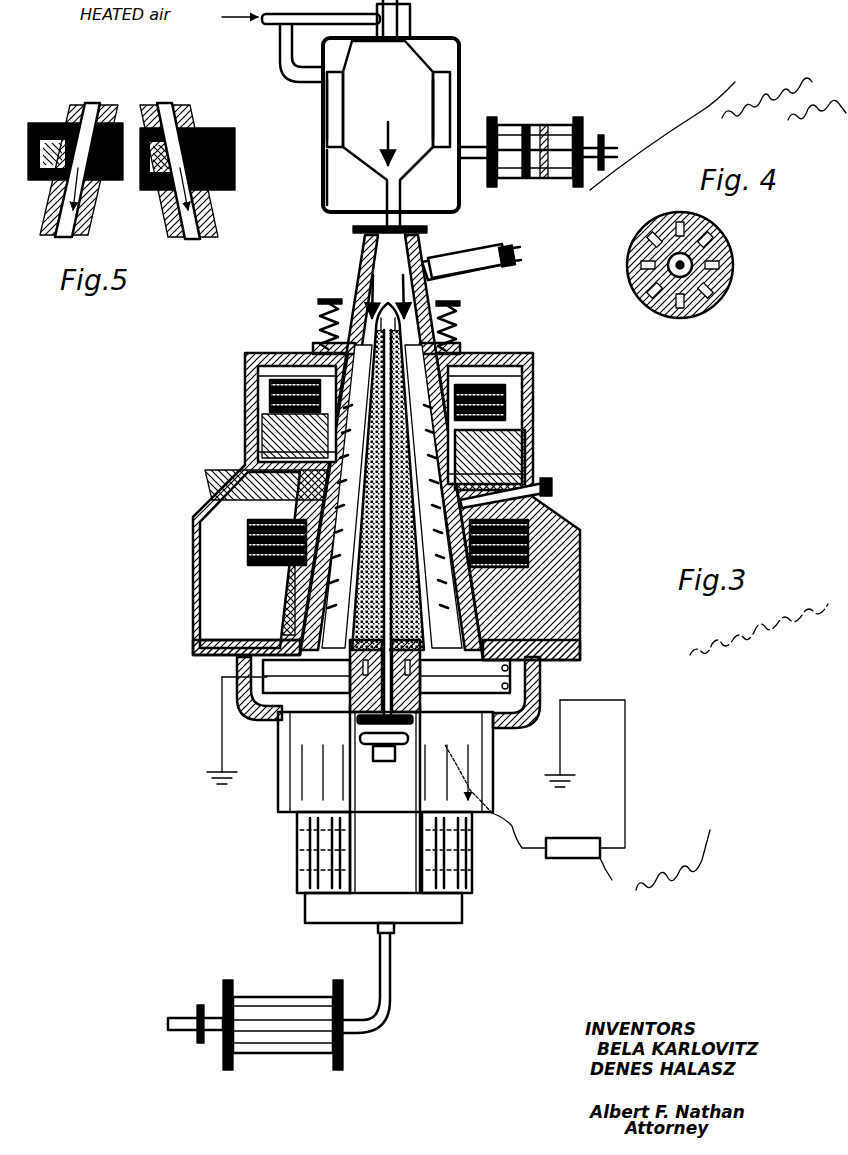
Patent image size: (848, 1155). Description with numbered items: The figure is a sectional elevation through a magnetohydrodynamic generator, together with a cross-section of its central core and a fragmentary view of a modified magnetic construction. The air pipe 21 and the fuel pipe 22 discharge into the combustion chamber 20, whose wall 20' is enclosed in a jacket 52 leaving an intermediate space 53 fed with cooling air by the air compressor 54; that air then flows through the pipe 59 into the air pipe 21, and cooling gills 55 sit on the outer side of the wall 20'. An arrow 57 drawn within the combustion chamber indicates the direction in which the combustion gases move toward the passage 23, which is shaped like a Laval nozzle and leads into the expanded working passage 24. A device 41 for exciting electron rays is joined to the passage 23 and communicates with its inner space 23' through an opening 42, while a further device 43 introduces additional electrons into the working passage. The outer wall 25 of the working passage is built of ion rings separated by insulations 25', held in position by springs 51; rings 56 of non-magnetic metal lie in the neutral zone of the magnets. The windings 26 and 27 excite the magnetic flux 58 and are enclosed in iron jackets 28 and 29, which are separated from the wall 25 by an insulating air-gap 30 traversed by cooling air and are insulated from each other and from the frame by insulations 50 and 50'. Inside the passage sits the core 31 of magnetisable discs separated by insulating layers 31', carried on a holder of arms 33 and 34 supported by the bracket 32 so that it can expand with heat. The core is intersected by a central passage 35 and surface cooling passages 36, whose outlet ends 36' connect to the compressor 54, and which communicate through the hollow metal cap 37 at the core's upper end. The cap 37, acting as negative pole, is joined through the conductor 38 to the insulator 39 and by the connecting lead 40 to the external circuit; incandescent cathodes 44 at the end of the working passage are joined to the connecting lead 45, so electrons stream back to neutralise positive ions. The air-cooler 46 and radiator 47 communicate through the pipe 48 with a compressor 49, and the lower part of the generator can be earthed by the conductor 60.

In FIG. 3, the combustion chamber 20 is at (515, 117).
In FIG. 3, the wall of the combustion chamber 20' is at (479, 110).
In FIG. 3, the air pipe 21 is at (262, 20).
In FIG. 3, the fuel pipe 22 is at (410, 28).
In FIG. 3, the passage 23 is at (396, 431).
In FIG. 3, the inner space of the pipe 23' is at (390, 280).
In FIG. 3, the working passage 24 is at (583, 547).
In FIG. 3, the outer wall of the working passage 25 is at (556, 543).
In FIG. 3, the insulations 25' is at (529, 457).
In FIG. 3, the winding 26 is at (268, 396).
In FIG. 3, the winding 27 is at (250, 560).
In FIG. 3, the iron jacket 28 is at (252, 362).
In FIG. 3, the iron jacket 29 is at (212, 510).
In FIG. 3, the insulating air-gap 30 is at (318, 350).
In FIG. 3, the core 31 is at (525, 415).
In FIG. 4, the core 31 is at (690, 265).
In FIG. 3, the insulating layers 31' is at (523, 371).
In FIG. 3, the bracket 32 is at (397, 760).
In FIG. 3, the arm 33 is at (535, 703).
In FIG. 3, the arm 34 is at (290, 688).
In FIG. 4, the central passage 35 is at (683, 268).
In FIG. 3, the cooling passages 36 is at (497, 511).
In FIG. 4, the cooling passages 36 is at (715, 271).
In FIG. 3, the outlet ends of the cooling passages 36' is at (386, 676).
In FIG. 3, the hollow metal cap 37 is at (370, 328).
In FIG. 3, the conductor 38 is at (463, 305).
In FIG. 4, the conductor 38 is at (657, 305).
In FIG. 3, the insulator 39 is at (370, 755).
In FIG. 3, the connecting lead 40 is at (512, 815).
In FIG. 3, the device for exciting the electron rays 41 is at (503, 252).
In FIG. 3, the opening 42 is at (448, 258).
In FIG. 3, the device for introducing additional electrons 43 is at (556, 490).
In FIG. 3, the incandescent cathodes 44 is at (545, 648).
In FIG. 3, the connecting lead 45 is at (545, 692).
In FIG. 3, the air-cooler 46 is at (290, 778).
In FIG. 3, the radiator 47 is at (300, 850).
In FIG. 3, the pipe 48 is at (392, 968).
In FIG. 3, the compressor 49 is at (265, 1020).
In FIG. 3, the insulation 50 is at (245, 486).
In FIG. 3, the insulation 50' is at (397, 635).
In FIG. 3, the springs 51 is at (323, 335).
In FIG. 3, the jacket 52 is at (325, 128).
In FIG. 3, the intermediate space 53 is at (340, 170).
In FIG. 3, the air compressor 54 is at (540, 128).
In FIG. 3, the cooling gills 55 is at (335, 98).
In FIG. 3, the rings 56 is at (388, 506).
In FIG. 3, the flow direction 57 is at (374, 142).
In FIG. 3, the magnetic flux 58 is at (262, 400).
In FIG. 3, the pipe 59 is at (283, 44).
In FIG. 3, the conductor 60 is at (560, 765).